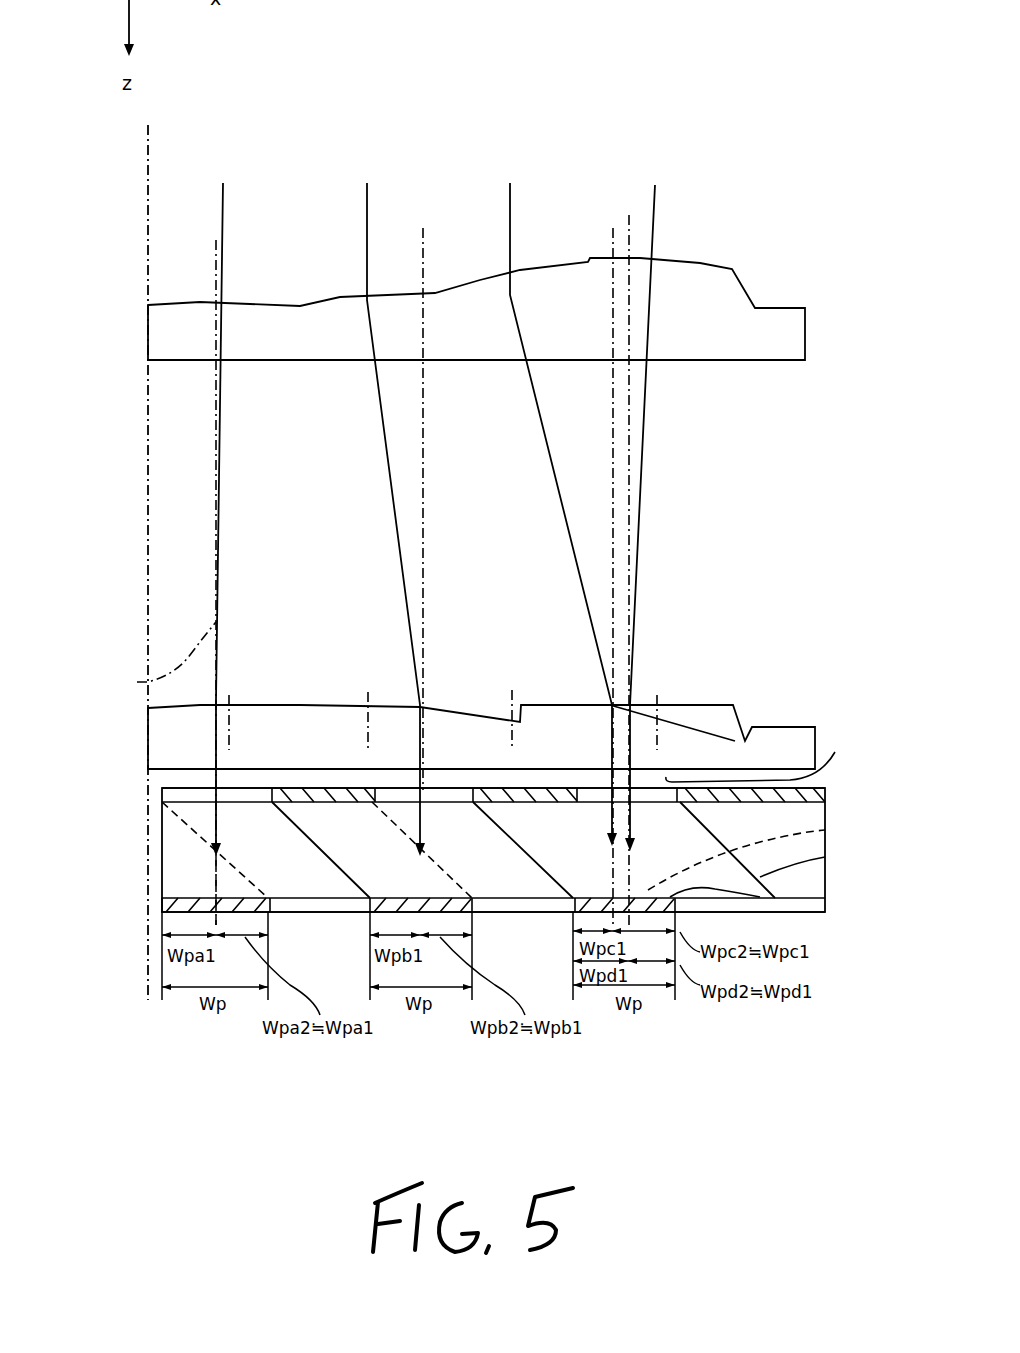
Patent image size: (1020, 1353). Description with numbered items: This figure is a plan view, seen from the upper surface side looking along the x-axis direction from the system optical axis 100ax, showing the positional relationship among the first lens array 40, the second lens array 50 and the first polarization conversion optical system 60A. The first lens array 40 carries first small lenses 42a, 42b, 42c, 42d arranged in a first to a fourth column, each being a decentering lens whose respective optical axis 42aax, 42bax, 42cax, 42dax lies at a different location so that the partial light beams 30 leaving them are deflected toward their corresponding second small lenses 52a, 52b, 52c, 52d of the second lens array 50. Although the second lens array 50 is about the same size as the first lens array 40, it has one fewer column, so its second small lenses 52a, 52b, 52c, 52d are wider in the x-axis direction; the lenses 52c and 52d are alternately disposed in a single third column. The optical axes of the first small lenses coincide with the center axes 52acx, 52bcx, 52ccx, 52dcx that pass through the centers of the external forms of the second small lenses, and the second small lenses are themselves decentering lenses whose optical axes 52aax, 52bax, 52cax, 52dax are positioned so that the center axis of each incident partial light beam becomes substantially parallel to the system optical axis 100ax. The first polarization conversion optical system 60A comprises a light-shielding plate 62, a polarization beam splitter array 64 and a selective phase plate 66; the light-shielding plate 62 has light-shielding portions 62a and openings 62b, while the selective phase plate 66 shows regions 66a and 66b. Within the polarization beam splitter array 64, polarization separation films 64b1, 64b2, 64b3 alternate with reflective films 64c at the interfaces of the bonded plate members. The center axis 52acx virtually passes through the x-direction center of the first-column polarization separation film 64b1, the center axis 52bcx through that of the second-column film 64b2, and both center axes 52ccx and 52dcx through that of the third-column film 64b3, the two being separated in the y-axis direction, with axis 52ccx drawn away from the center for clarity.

The system optical axis 100ax is at (148, 142).
The first lens array 40 is at (160, 346).
The first small lens 42a is at (186, 303).
The first small lens 42b is at (331, 298).
The first small lens 42c is at (533, 268).
The first small lens 42d is at (683, 258).
The optical axis of first small lens 42aax is at (216, 240).
The optical axis of first small lens 42bax is at (423, 228).
The optical axis of first small lens 42cax is at (613, 228).
The optical axis of first small lens 42dax is at (629, 215).
The light beams 30 is at (130, 579).
The second lens array 50 is at (160, 741).
The second small lens 52a is at (284, 706).
The second small lens 52b is at (455, 707).
The second small lens 52c is at (546, 705).
The second small lens 52d is at (712, 703).
The optical axis of second small lens 52aax is at (229, 695).
The optical axis of second small lens 52bax is at (385, 665).
The optical axis of second small lens 52cax is at (520, 676).
The optical axis of second small lens 52dax is at (657, 695).
The center axis of second small lens 52acx is at (138, 658).
The center axis of second small lens 52bcx is at (423, 583).
The center axis of second small lens 52ccx is at (613, 583).
The center axis of second small lens 52dcx is at (629, 612).
The first polarization conversion optical system 60A is at (152, 877).
The light-shielding plate 62 is at (826, 797).
The light shielding portion 62a is at (790, 788).
The opening portion 62b is at (773, 758).
The polarization beam splitter array 64 is at (826, 882).
The polarization separation film 64b1 is at (180, 834).
The polarization separation film 64b2 is at (430, 858).
The polarization separation film 64b3 is at (826, 832).
The reflective film 64c is at (825, 857).
The selective phase plate 66 is at (826, 912).
The lambda/2 retardation layer 66a is at (812, 913).
The opening of retardation plate 66b is at (790, 913).